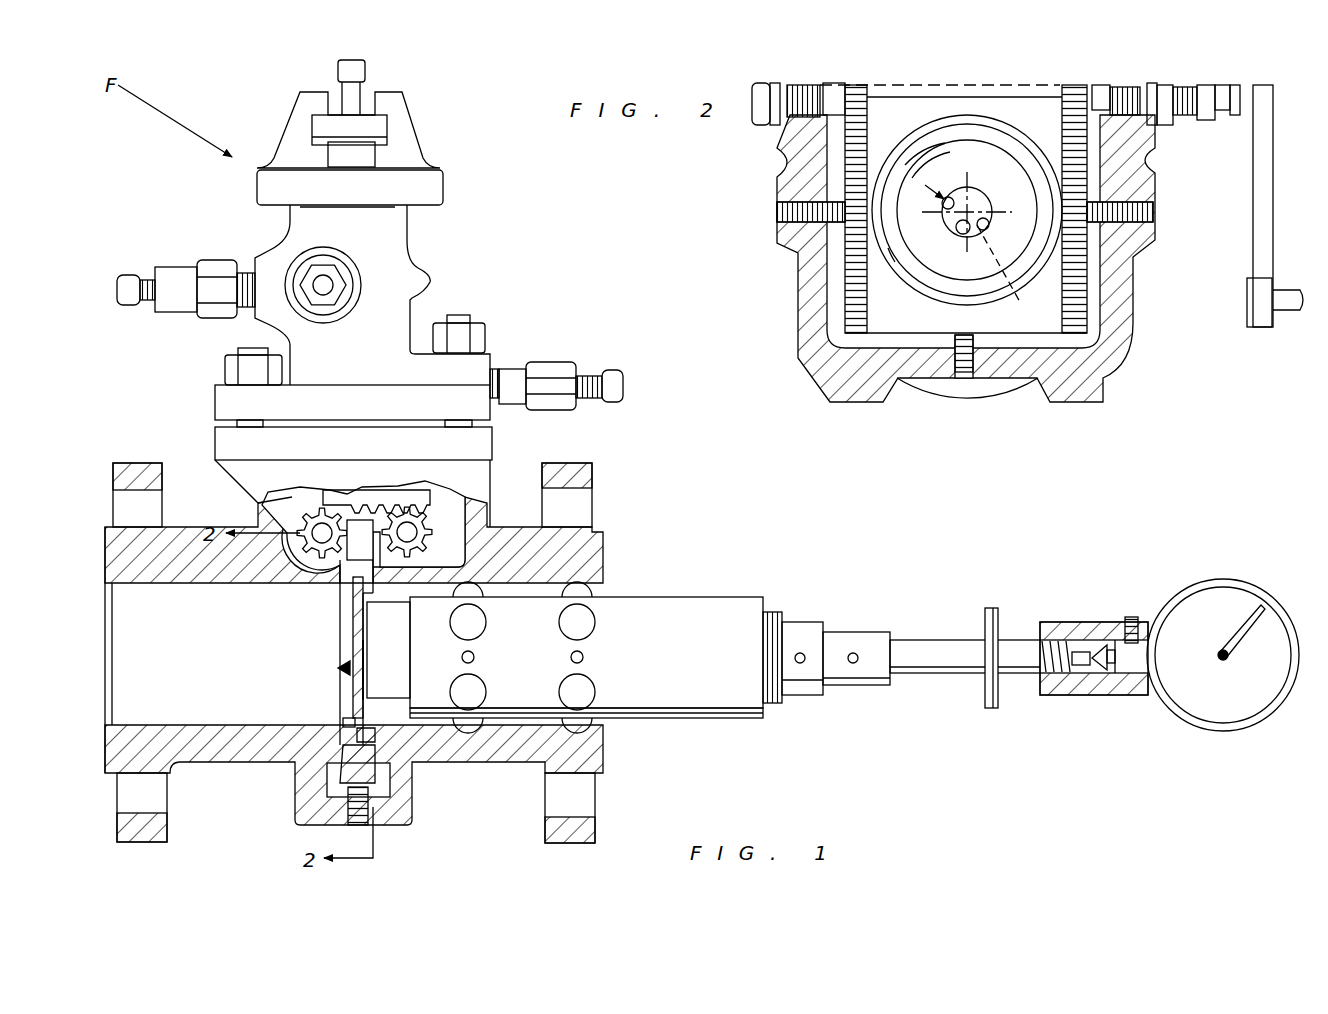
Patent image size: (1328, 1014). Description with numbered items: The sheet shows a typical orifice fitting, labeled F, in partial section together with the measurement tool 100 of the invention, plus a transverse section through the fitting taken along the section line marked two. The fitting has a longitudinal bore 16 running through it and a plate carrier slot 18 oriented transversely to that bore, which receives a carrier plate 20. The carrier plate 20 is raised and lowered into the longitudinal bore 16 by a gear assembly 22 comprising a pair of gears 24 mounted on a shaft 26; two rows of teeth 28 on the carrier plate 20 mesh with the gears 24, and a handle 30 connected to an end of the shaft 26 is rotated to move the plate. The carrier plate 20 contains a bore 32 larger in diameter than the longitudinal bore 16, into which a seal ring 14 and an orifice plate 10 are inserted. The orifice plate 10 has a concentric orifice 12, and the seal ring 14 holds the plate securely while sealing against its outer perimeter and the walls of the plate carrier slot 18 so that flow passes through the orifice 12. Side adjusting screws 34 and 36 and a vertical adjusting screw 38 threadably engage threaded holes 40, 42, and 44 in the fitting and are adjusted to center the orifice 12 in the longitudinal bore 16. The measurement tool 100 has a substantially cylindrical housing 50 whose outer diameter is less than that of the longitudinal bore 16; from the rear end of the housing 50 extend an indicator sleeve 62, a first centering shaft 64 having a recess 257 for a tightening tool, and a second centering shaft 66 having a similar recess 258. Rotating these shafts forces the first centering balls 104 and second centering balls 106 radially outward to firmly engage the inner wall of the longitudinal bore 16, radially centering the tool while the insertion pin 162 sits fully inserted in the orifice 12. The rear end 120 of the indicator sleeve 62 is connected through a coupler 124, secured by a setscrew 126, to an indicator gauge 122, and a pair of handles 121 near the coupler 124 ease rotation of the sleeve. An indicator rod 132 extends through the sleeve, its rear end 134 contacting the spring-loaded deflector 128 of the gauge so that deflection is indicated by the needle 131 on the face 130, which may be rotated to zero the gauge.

In FIG. 1, the orifice plate 10 is at (360, 693).
In FIG. 2, the orifice plate 10 is at (980, 155).
In FIG. 1, the orifice 12 is at (353, 633).
In FIG. 2, the orifice 12 is at (980, 190).
In FIG. 1, the seal ring 14 is at (340, 583).
In FIG. 2, the seal ring 14 is at (963, 128).
In FIG. 1, the longitudinal bore 16 is at (160, 590).
In FIG. 1, the plate carrier slot 18 is at (347, 720).
In FIG. 1, the carrier plate 20 is at (353, 765).
In FIG. 2, the carrier plate 20 is at (1000, 318).
In FIG. 2, the gear assembly 22 is at (862, 81).
In FIG. 1, the gears 24 is at (320, 527).
In FIG. 2, the shaft 26 is at (925, 92).
In FIG. 2, the teeth 28 is at (855, 260).
In FIG. 2, the handle 30 is at (1260, 315).
In FIG. 1, the bore 32 is at (380, 740).
In FIG. 2, the bore 32 is at (895, 252).
In FIG. 2, the side adjusting screw 34 is at (1140, 197).
In FIG. 2, the side adjusting screw 36 is at (790, 218).
In FIG. 1, the vertical adjusting screw 38 is at (347, 822).
In FIG. 2, the vertical adjusting screw 38 is at (973, 383).
In FIG. 2, the threaded hole 40 is at (1143, 212).
In FIG. 2, the threaded hole 42 is at (777, 210).
In FIG. 2, the threaded hole 44 is at (970, 370).
In FIG. 1, the housing 50 is at (720, 617).
In FIG. 1, the indicator sleeve 62 is at (938, 678).
In FIG. 1, the first centering shaft 64 is at (858, 690).
In FIG. 1, the second centering shaft 66 is at (793, 698).
In FIG. 1, the measurement tool 100 is at (918, 626).
In FIG. 1, the first centering balls 104 is at (467, 618).
In FIG. 1, the second centering balls 106 is at (577, 690).
In FIG. 1, the rear end of indicator sleeve 120 is at (1010, 665).
In FIG. 1, the handles 121 is at (995, 610).
In FIG. 1, the indicator gauge 122 is at (1258, 584).
In FIG. 1, the coupler 124 is at (1057, 630).
In FIG. 1, the setscrew 126 is at (1133, 620).
In FIG. 1, the deflector 128 is at (1098, 690).
In FIG. 1, the face 130 is at (1232, 690).
In FIG. 1, the needle 131 is at (1232, 633).
In FIG. 1, the indicator rod 132 is at (1080, 650).
In FIG. 1, the rear end of indicator rod 134 is at (1083, 668).
In FIG. 1, the insertion pin 162 is at (343, 668).
In FIG. 2, the insertion pin 162 is at (963, 228).
In FIG. 1, the recess 257 is at (855, 653).
In FIG. 1, the recess 258 is at (802, 655).